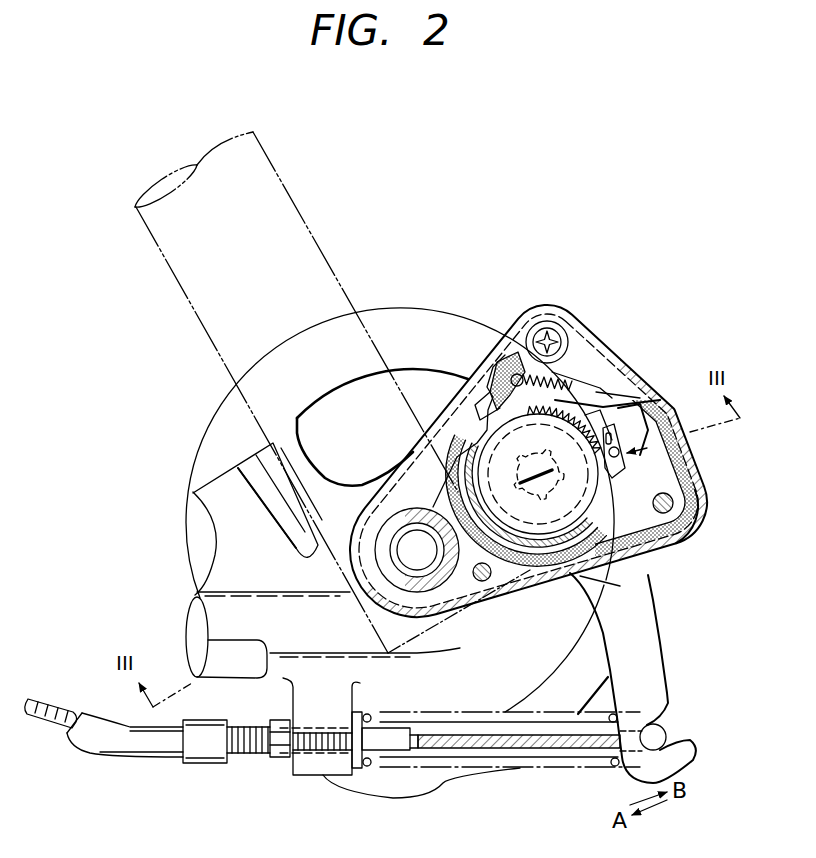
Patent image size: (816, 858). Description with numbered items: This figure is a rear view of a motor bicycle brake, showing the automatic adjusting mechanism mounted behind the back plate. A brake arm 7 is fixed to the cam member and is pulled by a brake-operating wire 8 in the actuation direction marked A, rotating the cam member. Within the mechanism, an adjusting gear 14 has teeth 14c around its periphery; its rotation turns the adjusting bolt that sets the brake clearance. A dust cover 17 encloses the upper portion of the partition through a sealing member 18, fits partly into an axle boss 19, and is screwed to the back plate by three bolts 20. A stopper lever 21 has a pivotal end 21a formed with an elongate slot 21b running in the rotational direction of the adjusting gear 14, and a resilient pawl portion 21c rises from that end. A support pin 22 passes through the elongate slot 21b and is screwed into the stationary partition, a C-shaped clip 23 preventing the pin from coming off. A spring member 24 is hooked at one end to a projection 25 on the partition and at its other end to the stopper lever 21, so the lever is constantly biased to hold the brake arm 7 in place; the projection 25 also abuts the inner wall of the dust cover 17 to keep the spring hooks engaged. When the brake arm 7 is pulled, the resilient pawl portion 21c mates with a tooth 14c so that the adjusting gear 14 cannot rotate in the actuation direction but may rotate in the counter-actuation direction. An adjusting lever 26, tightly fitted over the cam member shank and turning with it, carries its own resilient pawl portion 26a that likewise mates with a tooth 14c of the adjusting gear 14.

The brake arm 7 is at (658, 670).
The brake-operating wire 8 is at (575, 749).
The adjusting gear 14 is at (616, 515).
The tooth 14c is at (517, 398).
The dust cover 17 is at (578, 580).
The sealing member 18 is at (545, 548).
The axle boss 19 is at (393, 575).
The bolts 20 is at (548, 320).
The stopper lever 21 is at (648, 450).
The pivotal end 21a is at (678, 533).
The elongate slot 21b is at (600, 415).
The resilient pawl portion 21c is at (570, 398).
The support pin 22 is at (625, 428).
The C-shaped clip 23 is at (612, 452).
The spring member 24 is at (505, 366).
The projection 25 is at (492, 378).
The adjusting lever 26 is at (630, 500).
The resilient pawl portion 26a is at (592, 427).